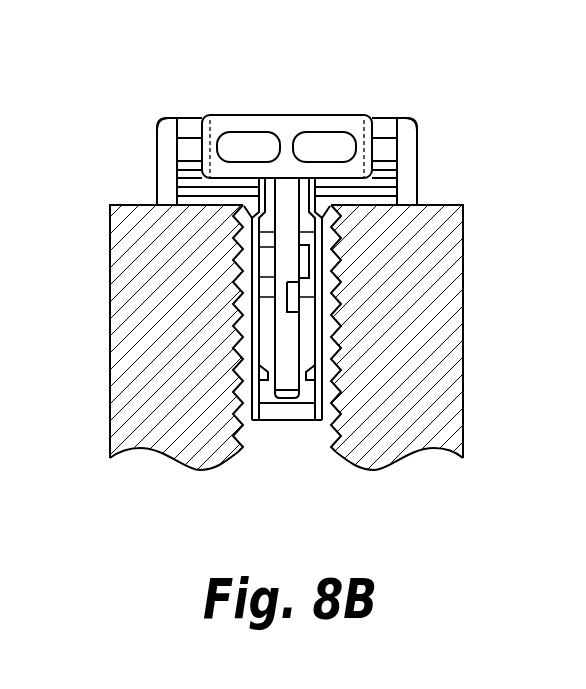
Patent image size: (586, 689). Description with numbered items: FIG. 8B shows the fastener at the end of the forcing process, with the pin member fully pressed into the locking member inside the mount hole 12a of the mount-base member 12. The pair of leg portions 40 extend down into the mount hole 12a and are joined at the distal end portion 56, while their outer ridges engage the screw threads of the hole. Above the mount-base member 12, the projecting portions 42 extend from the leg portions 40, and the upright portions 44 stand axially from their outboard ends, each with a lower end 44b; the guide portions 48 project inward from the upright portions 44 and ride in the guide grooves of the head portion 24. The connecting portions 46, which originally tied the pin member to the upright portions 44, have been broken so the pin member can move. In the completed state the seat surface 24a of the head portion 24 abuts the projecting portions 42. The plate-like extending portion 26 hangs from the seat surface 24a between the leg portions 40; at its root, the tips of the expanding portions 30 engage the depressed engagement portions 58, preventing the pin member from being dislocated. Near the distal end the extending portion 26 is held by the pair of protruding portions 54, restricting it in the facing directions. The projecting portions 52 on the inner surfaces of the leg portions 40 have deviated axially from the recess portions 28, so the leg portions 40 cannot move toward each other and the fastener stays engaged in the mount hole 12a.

The mount-base member 12 is at (392, 435).
The mount hole 12a is at (245, 427).
The head portion 24 is at (307, 116).
The seat surface 24a is at (328, 176).
The extending portion 26 is at (275, 335).
The recess portion 28 is at (300, 312).
The expanding portion 30 is at (255, 235).
The leg portion 40 is at (243, 297).
The projecting portion 42 is at (200, 186).
The upright portion 44 is at (165, 157).
The lower end of upright portion 44b is at (165, 204).
The connecting portion 46 is at (192, 116).
The guide portion 48 is at (190, 138).
The projecting portion 52 is at (302, 258).
The protruding portion 54 is at (262, 378).
The distal end portion 56 is at (287, 412).
The engagement portion 58 is at (243, 210).